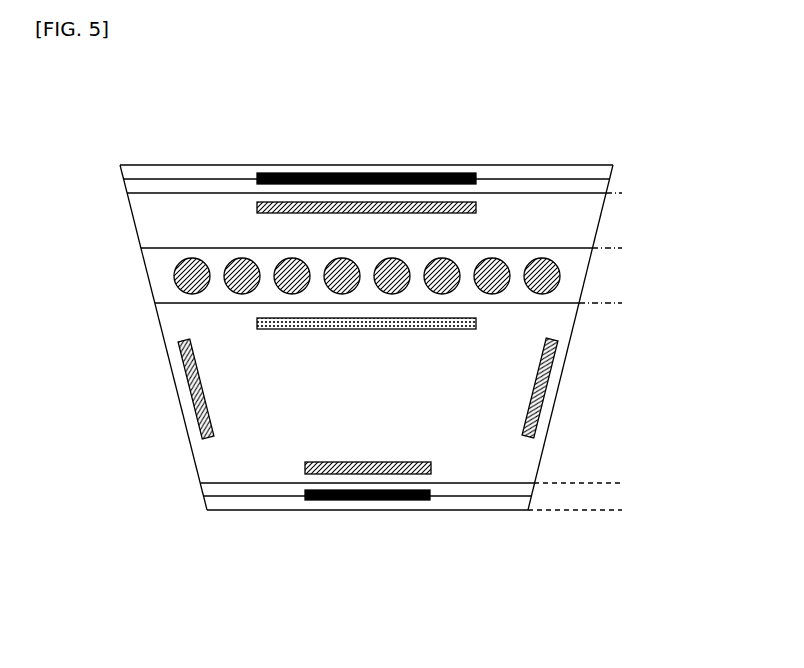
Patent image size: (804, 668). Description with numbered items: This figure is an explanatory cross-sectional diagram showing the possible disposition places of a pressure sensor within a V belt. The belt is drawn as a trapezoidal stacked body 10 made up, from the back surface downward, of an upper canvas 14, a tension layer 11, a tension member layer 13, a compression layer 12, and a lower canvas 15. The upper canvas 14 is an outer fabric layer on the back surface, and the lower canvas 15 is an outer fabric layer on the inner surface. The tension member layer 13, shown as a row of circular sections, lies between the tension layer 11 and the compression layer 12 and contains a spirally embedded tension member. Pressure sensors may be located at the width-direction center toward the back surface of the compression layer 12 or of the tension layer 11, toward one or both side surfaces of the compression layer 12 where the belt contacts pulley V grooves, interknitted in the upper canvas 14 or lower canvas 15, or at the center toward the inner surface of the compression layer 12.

The stacked body 10 is at (672, 158).
The tension layer 11 is at (625, 193).
The compression layer 12 is at (625, 303).
The tension member layer 13 is at (625, 248).
The upper canvas 14 is at (625, 165).
The lower canvas 15 is at (625, 483).